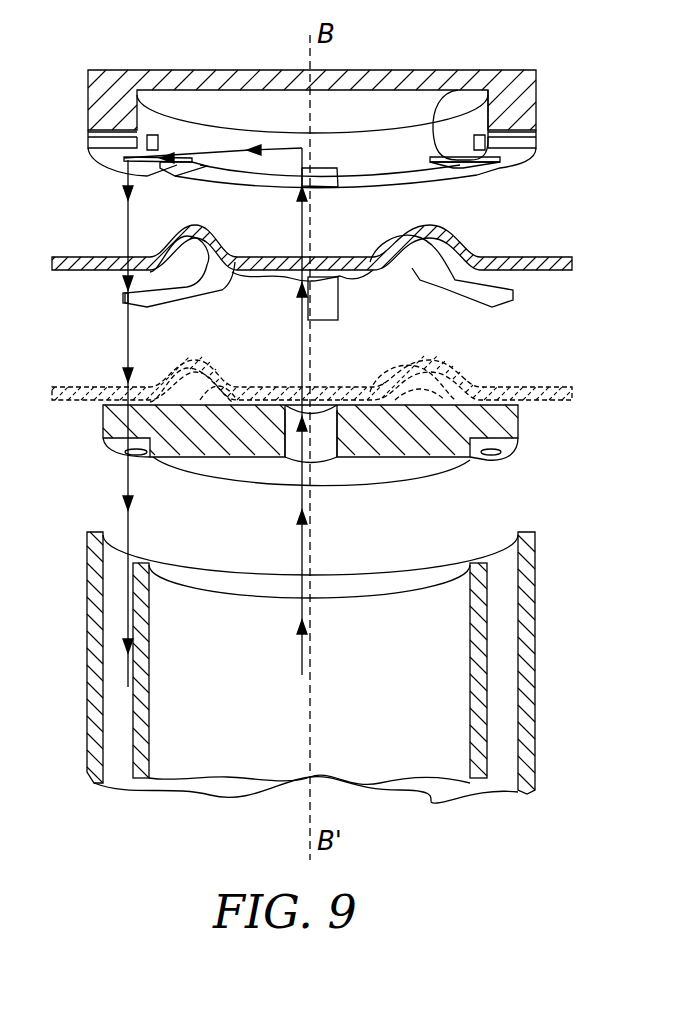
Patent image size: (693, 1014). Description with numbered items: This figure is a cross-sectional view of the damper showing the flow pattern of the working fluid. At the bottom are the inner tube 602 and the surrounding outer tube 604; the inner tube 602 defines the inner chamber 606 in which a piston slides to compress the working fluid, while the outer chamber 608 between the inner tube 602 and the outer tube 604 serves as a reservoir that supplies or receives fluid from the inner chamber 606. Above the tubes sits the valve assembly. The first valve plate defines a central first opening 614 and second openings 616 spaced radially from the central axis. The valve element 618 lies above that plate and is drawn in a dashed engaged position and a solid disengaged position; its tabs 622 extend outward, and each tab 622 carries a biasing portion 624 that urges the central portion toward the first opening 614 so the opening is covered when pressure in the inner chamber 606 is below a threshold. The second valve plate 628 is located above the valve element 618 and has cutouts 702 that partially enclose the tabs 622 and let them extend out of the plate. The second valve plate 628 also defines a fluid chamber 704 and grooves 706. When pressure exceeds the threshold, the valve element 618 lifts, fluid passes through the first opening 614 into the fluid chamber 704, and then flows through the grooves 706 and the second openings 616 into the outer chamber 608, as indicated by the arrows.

The inner tube 602 is at (488, 614).
The outer tube 604 is at (535, 660).
The inner chamber 606 is at (430, 735).
The outer chamber 608 is at (497, 697).
The first opening 614 is at (322, 434).
The second opening 616 is at (496, 455).
The valve element 618 is at (363, 250).
The tab 622 is at (572, 263).
The biasing portion 624 is at (462, 214).
The second valve plate 628 is at (370, 99).
The cutout 702 is at (440, 105).
The fluid chamber 704 is at (393, 105).
The groove 706 is at (510, 163).